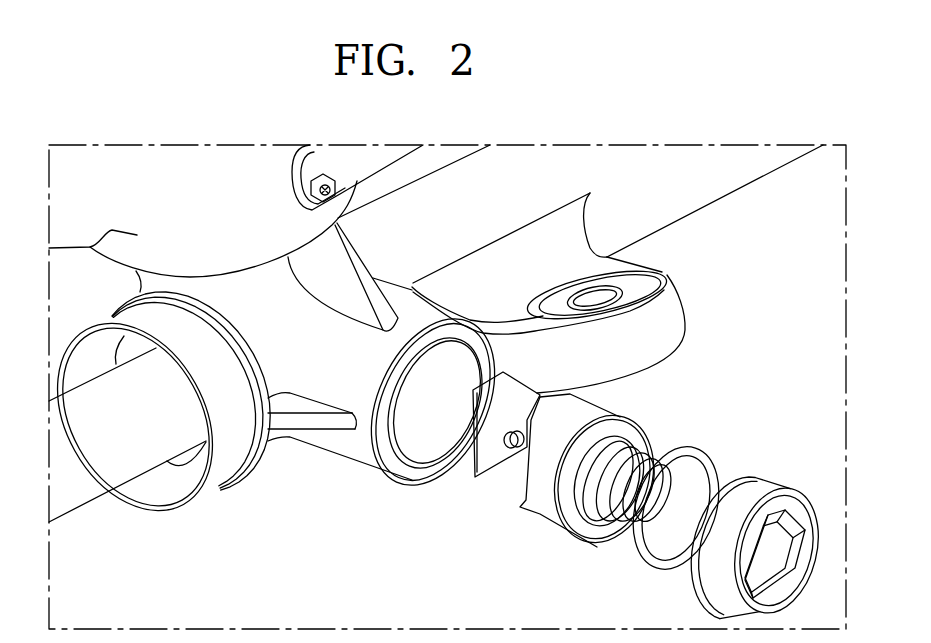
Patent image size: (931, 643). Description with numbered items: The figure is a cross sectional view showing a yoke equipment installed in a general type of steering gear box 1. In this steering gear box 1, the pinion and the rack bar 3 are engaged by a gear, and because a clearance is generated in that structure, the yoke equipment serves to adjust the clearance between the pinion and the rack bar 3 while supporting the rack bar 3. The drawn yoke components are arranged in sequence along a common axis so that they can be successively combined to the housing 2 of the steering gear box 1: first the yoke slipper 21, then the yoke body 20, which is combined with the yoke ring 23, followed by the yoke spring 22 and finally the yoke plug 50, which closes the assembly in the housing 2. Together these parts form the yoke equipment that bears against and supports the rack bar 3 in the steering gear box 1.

The steering gear box 1 is at (291, 483).
The housing 2 is at (418, 445).
The rack bar 3 is at (90, 477).
The yoke body 20 is at (545, 512).
The yoke slipper 21 is at (490, 458).
The yoke spring 22 is at (613, 517).
The yoke ring 23 is at (707, 452).
The yoke plug 50 is at (767, 495).